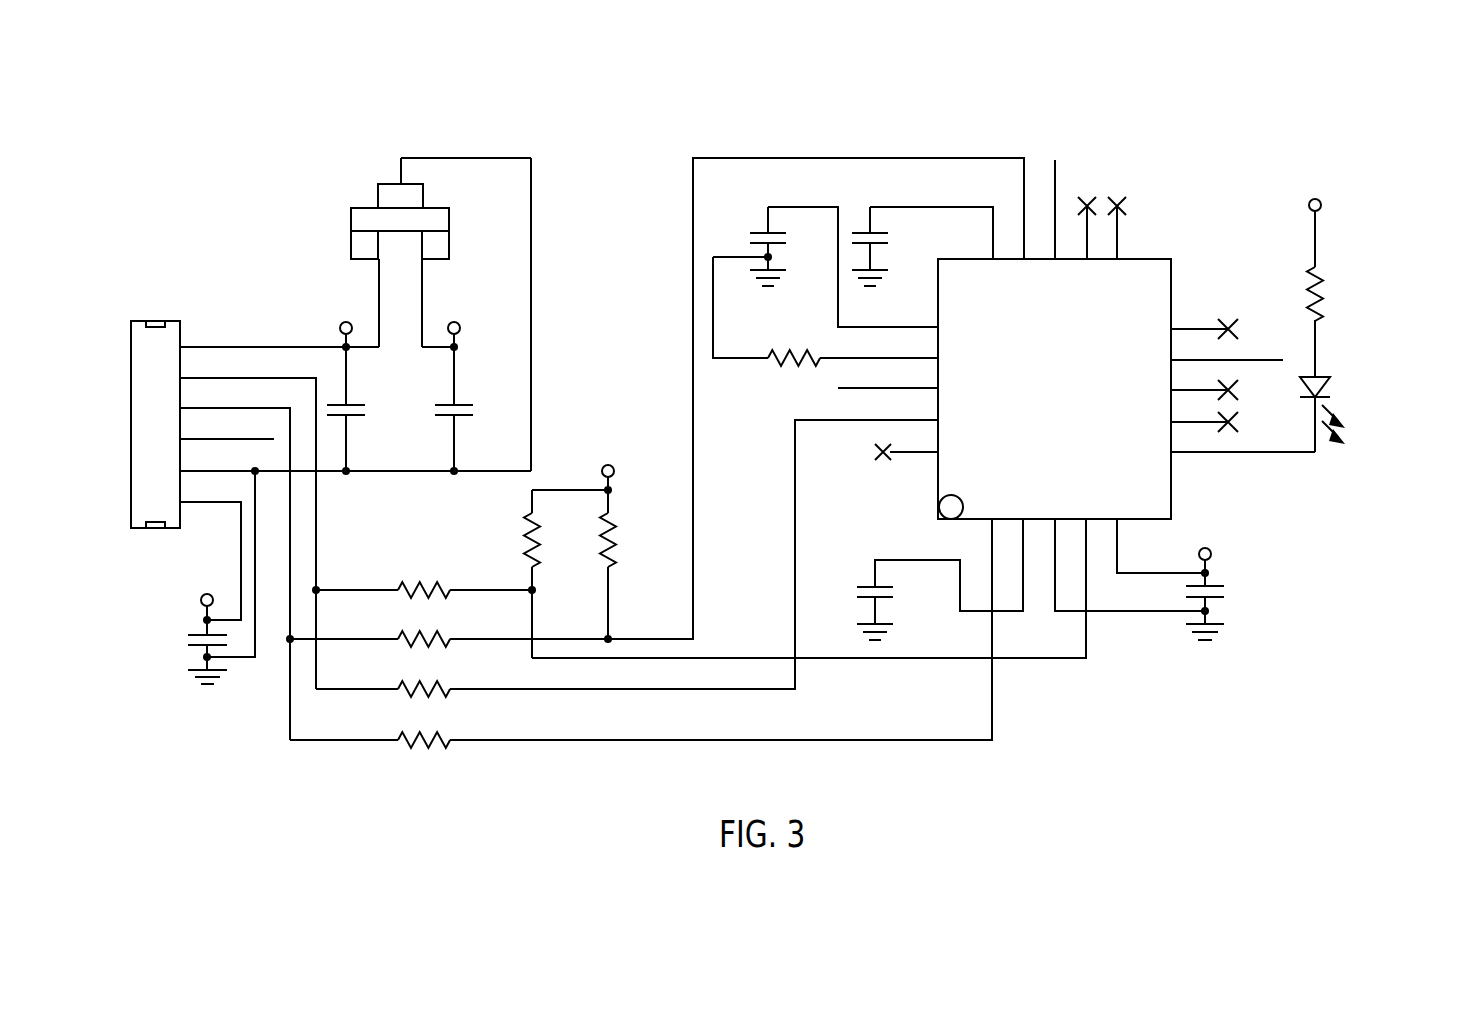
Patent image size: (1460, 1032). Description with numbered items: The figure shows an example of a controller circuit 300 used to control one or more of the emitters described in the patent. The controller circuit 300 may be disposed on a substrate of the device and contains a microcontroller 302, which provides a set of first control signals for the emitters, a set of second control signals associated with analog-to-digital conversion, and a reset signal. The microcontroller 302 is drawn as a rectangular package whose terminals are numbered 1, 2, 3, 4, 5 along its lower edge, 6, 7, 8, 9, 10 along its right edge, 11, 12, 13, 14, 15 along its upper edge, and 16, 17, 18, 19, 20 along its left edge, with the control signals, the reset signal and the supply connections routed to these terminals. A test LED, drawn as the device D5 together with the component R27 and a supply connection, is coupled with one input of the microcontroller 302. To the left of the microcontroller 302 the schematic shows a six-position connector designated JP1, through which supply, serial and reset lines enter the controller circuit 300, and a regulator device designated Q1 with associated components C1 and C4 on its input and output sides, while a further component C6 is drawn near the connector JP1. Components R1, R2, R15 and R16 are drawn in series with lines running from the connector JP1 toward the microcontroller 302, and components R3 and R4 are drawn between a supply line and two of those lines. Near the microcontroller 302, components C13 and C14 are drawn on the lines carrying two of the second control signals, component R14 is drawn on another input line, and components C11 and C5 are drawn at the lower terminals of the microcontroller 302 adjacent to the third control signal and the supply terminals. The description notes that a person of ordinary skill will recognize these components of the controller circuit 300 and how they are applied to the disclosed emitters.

The controller circuit 300 is at (203, 134).
The microcontroller 302 is at (1140, 258).
The connector JP1 is at (147, 424).
The voltage regulator Q1 is at (373, 222).
The capacitor C1 is at (366, 409).
The capacitor C4 is at (482, 409).
The capacitor C6 is at (187, 647).
The capacitor C13 is at (831, 252).
The capacitor C14 is at (922, 231).
The capacitor C11 is at (940, 579).
The capacitor C5 is at (1168, 579).
The resistor R1 is at (424, 580).
The resistor R2 is at (657, 402).
The resistor R3 is at (554, 574).
The resistor R4 is at (630, 564).
The resistor R14 is at (825, 311).
The resistor R15 is at (627, 558).
The resistor R16 is at (641, 633).
The resistor R27 is at (1336, 294).
The test LED D5 is at (1374, 414).
The IC pin 1 (P0.7) 1 is at (979, 539).
The IC pin 2 (P1.7) 2 is at (1010, 539).
The IC pin 3 (VSS) 3 is at (1042, 539).
The IC pin 4 (P1.6) 4 is at (1073, 539).
The IC pin 5 (VDD) 5 is at (1104, 539).
The IC pin 6 is at (1193, 438).
The IC pin 7 is at (1193, 408).
The IC pin 8 is at (1193, 376).
The IC pin 9 is at (1193, 346).
The IC pin 10 is at (1193, 314).
The IC pin 11 is at (1104, 237).
The IC pin 12 is at (1074, 237).
The IC pin 13 is at (1042, 237).
The IC pin 14 is at (1011, 237).
The IC pin 15 is at (980, 233).
The IC pin 16 is at (916, 314).
The IC pin 17 is at (916, 344).
The IC pin 18 is at (916, 376).
The IC pin 19 is at (916, 406).
The IC pin 20 is at (916, 438).